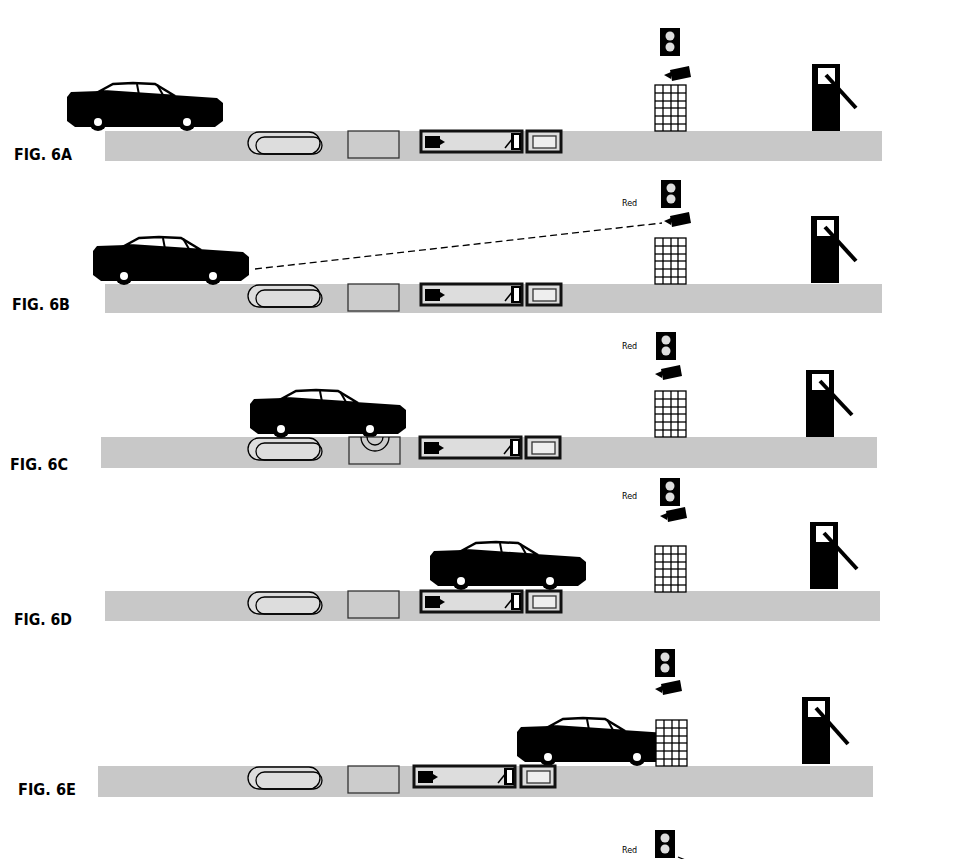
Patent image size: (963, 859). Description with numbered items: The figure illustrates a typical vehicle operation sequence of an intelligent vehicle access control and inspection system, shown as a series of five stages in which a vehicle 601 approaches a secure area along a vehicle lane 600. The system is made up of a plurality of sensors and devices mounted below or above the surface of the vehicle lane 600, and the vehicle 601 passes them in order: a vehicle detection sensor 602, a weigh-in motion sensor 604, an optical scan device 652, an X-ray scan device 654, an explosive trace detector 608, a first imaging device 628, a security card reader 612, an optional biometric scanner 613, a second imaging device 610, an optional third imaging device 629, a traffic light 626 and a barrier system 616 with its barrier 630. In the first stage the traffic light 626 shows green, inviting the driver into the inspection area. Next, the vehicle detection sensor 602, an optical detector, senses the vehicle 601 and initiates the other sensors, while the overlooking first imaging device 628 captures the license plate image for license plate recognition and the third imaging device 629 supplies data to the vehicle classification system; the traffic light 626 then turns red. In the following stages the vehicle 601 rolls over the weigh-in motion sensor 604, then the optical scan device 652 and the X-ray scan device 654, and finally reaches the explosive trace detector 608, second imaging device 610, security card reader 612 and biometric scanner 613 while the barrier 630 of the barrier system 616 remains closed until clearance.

In FIG. 6A, the vehicle lane 600 is at (125, 162).
In FIG. 6B, the vehicle lane 600 is at (125, 313).
In FIG. 6C, the vehicle lane 600 is at (160, 469).
In FIG. 6D, the vehicle lane 600 is at (143, 611).
In FIG. 6E, the vehicle lane 600 is at (143, 798).
In FIG. 6A, the vehicle 601 is at (103, 88).
In FIG. 6B, the vehicle 601 is at (115, 248).
In FIG. 6C, the vehicle 601 is at (257, 410).
In FIG. 6D, the vehicle 601 is at (432, 572).
In FIG. 6E, the vehicle 601 is at (520, 748).
In FIG. 6A, the vehicle detection sensor 602 is at (280, 154).
In FIG. 6B, the vehicle detection sensor 602 is at (297, 310).
In FIG. 6A, the weigh-in motion sensor 604 is at (367, 154).
In FIG. 6C, the weigh-in motion sensor 604 is at (402, 467).
In FIG. 6A, the explosive trace detector 608 is at (573, 126).
In FIG. 6A, the second imaging device 610 is at (654, 126).
In FIG. 6A, the security card reader 612 is at (654, 126).
In FIG. 6A, the biometric scanner 613 is at (666, 116).
In FIG. 6A, the barrier system 616 is at (841, 73).
In FIG. 6B, the barrier system 616 is at (833, 237).
In FIG. 6C, the barrier system 616 is at (830, 395).
In FIG. 6D, the barrier system 616 is at (833, 542).
In FIG. 6E, the barrier system 616 is at (833, 713).
In FIG. 6A, the traffic light 626 is at (658, 40).
In FIG. 6E, the traffic light 626 is at (677, 662).
In FIG. 6A, the first imaging device 628 is at (727, 96).
In FIG. 6B, the first imaging device 628 is at (727, 242).
In FIG. 6A, the third imaging device 629 is at (678, 78).
In FIG. 6B, the third imaging device 629 is at (673, 225).
In FIG. 6A, the barrier 630 is at (849, 99).
In FIG. 6B, the barrier 630 is at (852, 257).
In FIG. 6C, the barrier 630 is at (852, 413).
In FIG. 6D, the barrier 630 is at (850, 575).
In FIG. 6E, the barrier 630 is at (850, 748).
In FIG. 6A, the optical scan device 652 is at (468, 154).
In FIG. 6D, the optical scan device 652 is at (433, 612).
In FIG. 6A, the X-ray scan device 654 is at (547, 152).
In FIG. 6D, the X-ray scan device 654 is at (539, 612).
In FIG. 6E, the X-ray scan device 654 is at (533, 788).